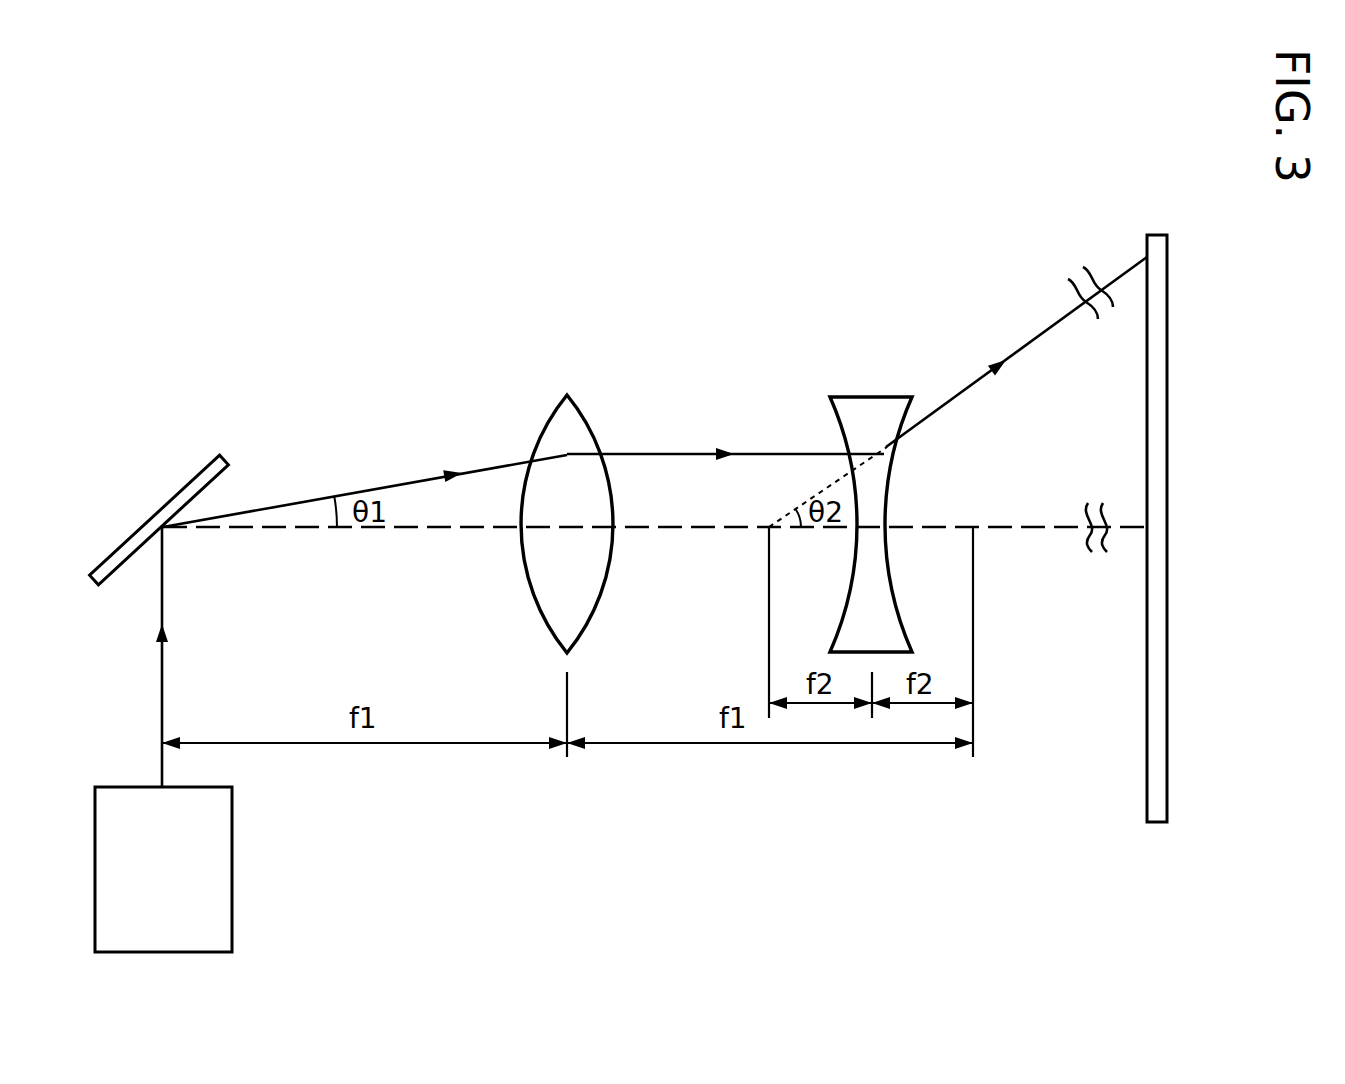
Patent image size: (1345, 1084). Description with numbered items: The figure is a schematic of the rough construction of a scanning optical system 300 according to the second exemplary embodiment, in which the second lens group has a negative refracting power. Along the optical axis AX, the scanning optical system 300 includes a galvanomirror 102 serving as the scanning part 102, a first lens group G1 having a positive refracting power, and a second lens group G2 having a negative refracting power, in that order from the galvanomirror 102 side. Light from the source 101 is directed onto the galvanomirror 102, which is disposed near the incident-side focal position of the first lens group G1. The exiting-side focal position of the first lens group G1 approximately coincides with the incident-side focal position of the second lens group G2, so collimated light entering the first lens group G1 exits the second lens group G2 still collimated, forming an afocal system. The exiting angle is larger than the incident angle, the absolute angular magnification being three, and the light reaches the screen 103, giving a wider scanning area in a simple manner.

The light source 101 is at (232, 921).
The galvanomirror 102 is at (216, 460).
The screen 103 is at (1158, 235).
The scanning optical system 300 is at (714, 479).
The first lens group G1 is at (583, 413).
The second lens group G2 is at (828, 523).
The optical axis AX is at (1025, 527).